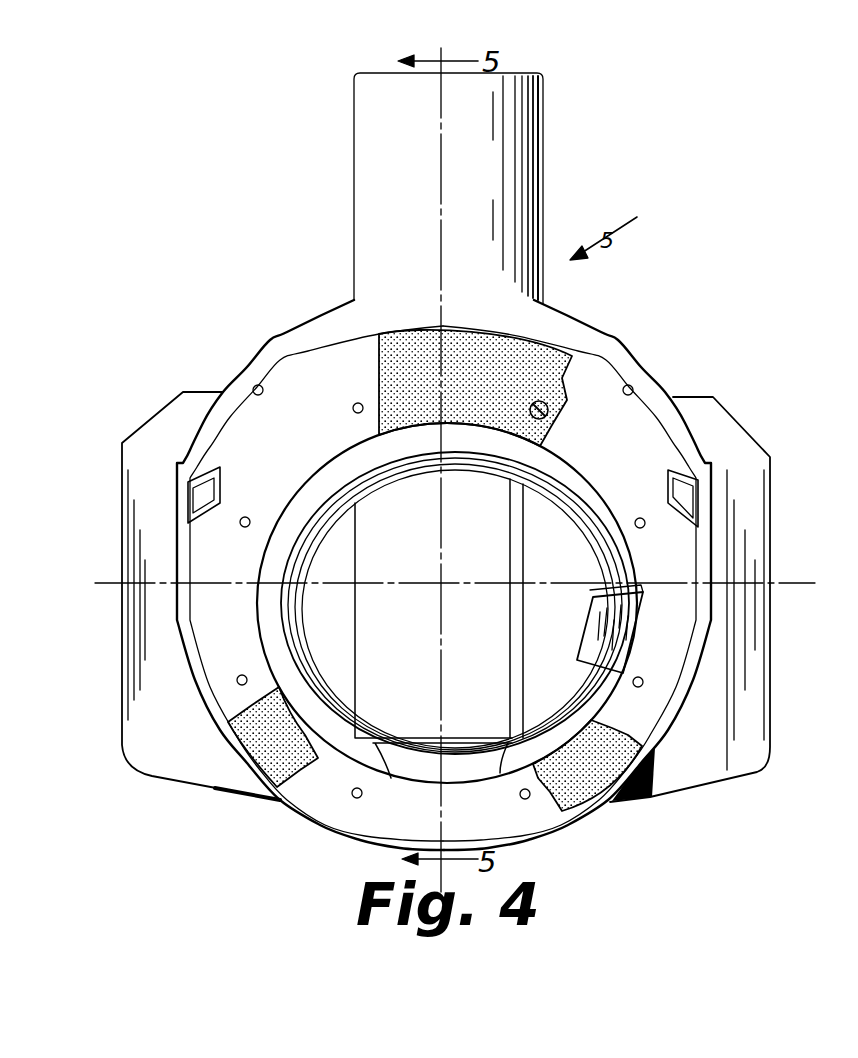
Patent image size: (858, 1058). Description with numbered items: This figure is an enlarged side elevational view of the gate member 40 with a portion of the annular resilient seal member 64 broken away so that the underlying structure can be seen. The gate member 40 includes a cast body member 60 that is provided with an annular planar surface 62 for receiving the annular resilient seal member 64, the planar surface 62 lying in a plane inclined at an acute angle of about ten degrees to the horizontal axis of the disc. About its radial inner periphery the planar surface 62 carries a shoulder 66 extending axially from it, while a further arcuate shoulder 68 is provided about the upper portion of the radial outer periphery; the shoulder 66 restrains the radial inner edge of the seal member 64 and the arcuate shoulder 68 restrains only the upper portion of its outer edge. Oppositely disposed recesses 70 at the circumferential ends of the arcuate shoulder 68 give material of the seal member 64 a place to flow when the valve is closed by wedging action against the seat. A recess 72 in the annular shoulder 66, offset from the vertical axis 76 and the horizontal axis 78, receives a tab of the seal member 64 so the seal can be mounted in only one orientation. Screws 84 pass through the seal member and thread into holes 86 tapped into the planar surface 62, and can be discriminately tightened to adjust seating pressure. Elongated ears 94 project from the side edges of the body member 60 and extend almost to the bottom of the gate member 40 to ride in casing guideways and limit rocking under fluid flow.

The gate member 40 is at (638, 222).
The cast body member 60 is at (548, 356).
The annular planar surface 62 is at (680, 600).
The annular resilient seal member 64 is at (540, 352).
The shoulder 66 is at (607, 703).
The arcuate shoulder 68 is at (258, 385).
The recesses 70 is at (220, 478).
The recess 72 is at (617, 653).
The vertical axis 76 is at (440, 557).
The horizontal axis 78 is at (560, 590).
The screws 84 is at (547, 403).
The tapped holes 86 is at (645, 523).
The ears 94 is at (190, 788).